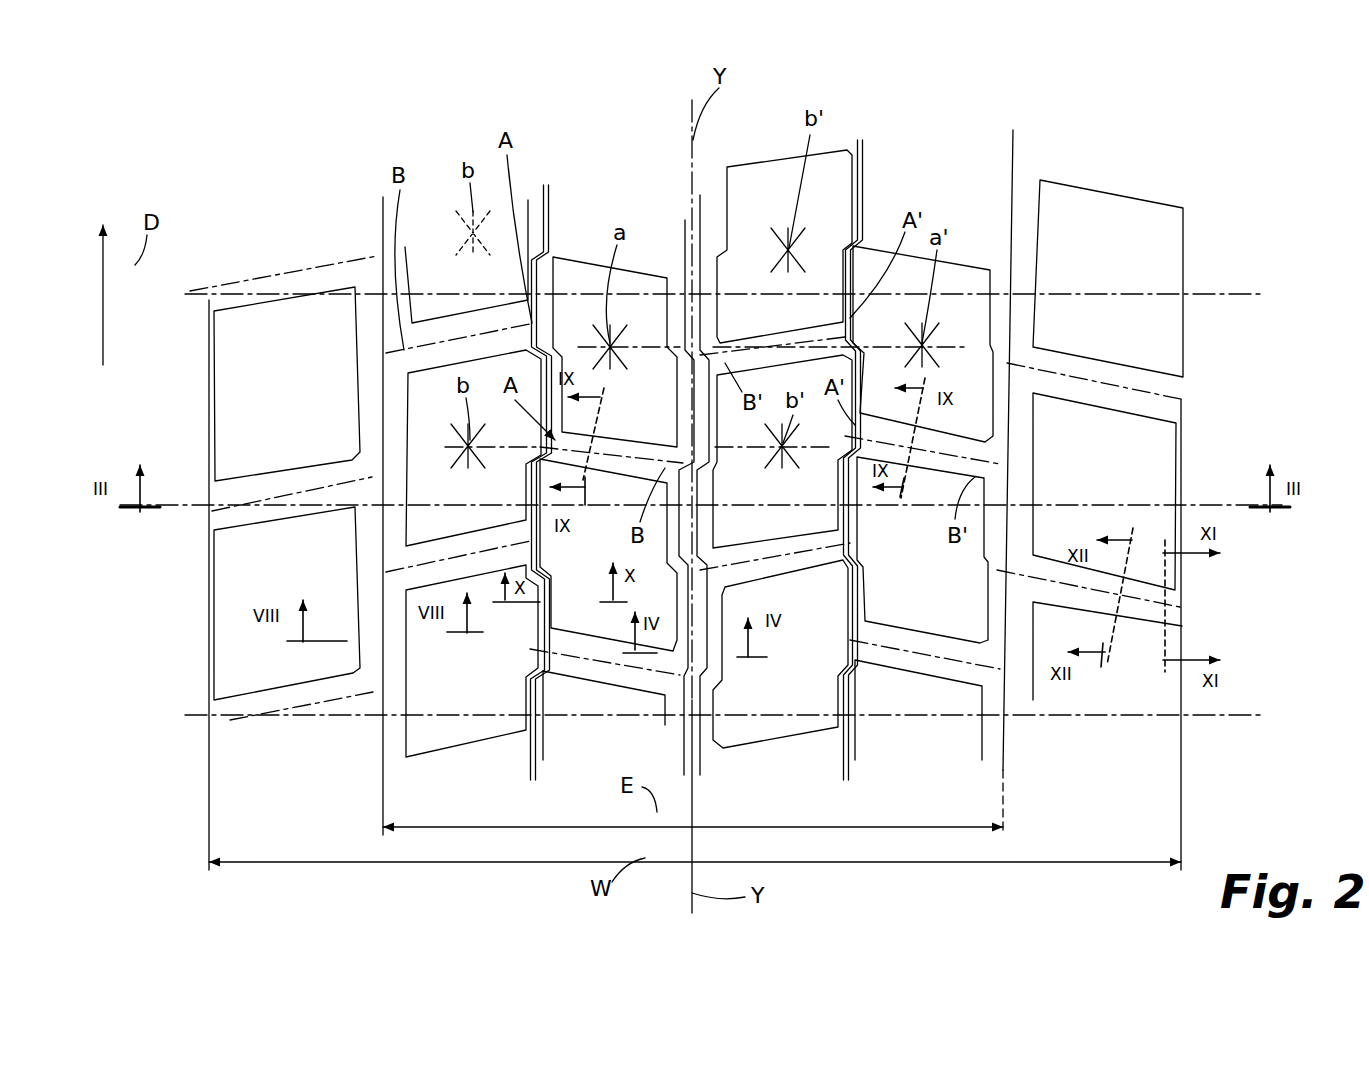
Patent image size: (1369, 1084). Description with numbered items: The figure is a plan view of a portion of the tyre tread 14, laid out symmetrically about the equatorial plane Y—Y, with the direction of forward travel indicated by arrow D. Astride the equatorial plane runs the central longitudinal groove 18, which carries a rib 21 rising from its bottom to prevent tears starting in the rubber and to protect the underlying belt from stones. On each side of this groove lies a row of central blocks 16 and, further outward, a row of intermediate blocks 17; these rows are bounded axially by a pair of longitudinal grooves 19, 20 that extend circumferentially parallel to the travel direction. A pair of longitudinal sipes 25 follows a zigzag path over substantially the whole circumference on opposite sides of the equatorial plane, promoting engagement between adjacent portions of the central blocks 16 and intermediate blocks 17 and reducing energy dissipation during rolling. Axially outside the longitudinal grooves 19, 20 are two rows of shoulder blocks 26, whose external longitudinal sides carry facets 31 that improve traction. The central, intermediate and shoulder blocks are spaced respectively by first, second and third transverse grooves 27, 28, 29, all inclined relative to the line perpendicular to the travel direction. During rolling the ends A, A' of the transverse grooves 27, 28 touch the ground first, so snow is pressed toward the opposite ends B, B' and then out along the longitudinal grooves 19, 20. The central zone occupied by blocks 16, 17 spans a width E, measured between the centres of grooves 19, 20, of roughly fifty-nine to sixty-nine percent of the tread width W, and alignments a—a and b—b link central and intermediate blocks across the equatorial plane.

The tread pattern 14 is at (630, 130).
The central blocks 16 is at (584, 285).
The intermediate blocks 17 is at (962, 282).
The central longitudinal groove 18 is at (705, 250).
The longitudinal groove 19 is at (368, 318).
The longitudinal groove 20 is at (1025, 217).
The rib 21 is at (686, 245).
The longitudinal sipes 25 is at (546, 258).
The shoulder blocks 26 is at (278, 340).
The first transverse grooves 27 is at (645, 440).
The second transverse grooves 28 is at (442, 317).
The third transverse grooves 29 is at (227, 493).
The facets 31 is at (213, 605).